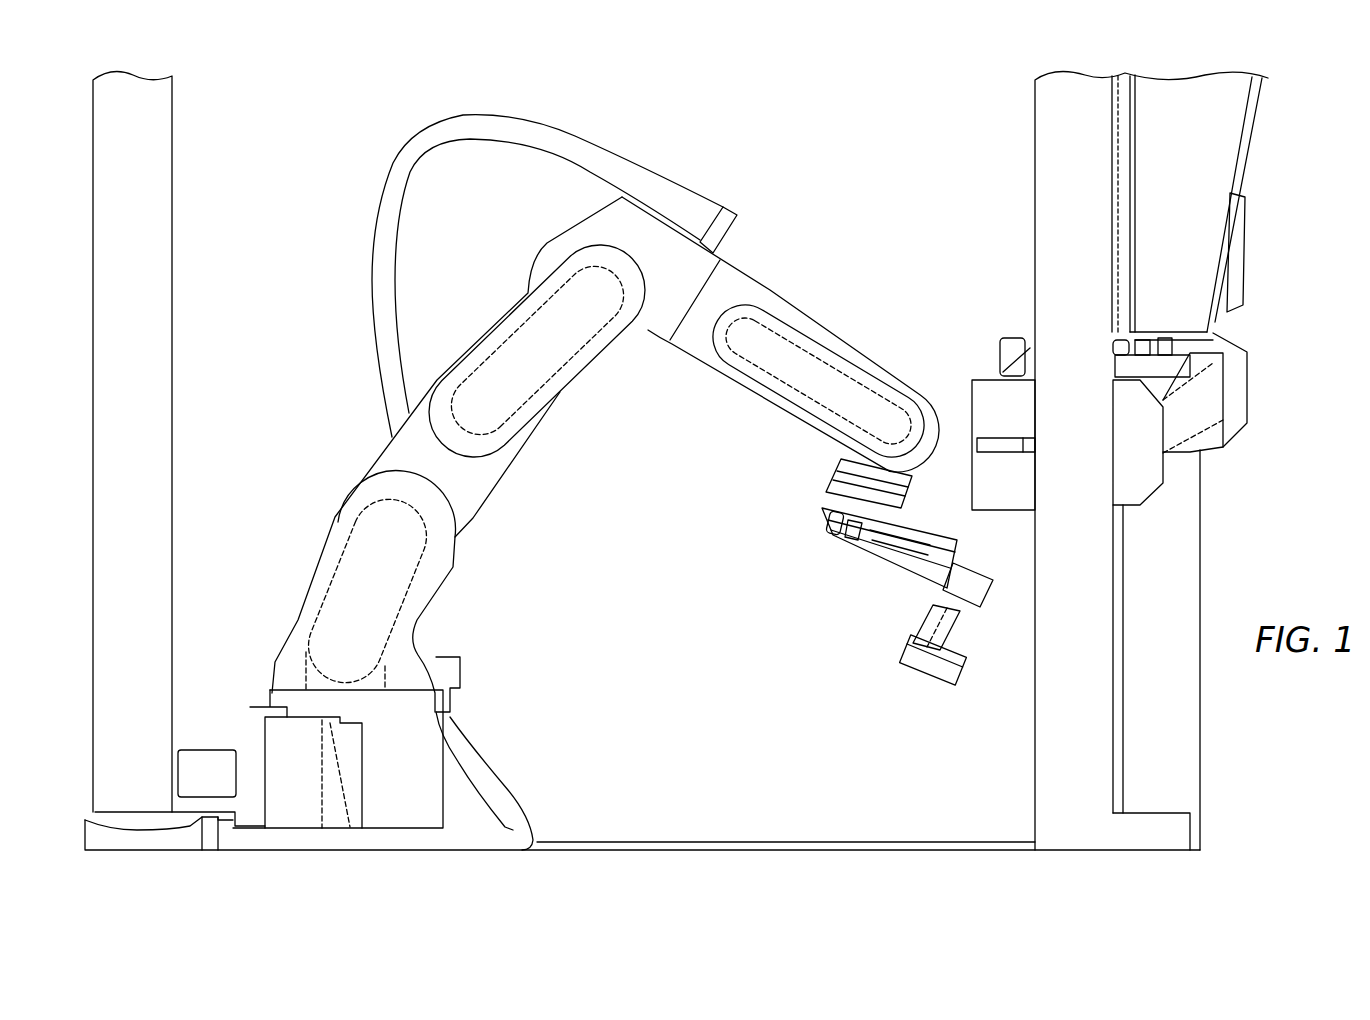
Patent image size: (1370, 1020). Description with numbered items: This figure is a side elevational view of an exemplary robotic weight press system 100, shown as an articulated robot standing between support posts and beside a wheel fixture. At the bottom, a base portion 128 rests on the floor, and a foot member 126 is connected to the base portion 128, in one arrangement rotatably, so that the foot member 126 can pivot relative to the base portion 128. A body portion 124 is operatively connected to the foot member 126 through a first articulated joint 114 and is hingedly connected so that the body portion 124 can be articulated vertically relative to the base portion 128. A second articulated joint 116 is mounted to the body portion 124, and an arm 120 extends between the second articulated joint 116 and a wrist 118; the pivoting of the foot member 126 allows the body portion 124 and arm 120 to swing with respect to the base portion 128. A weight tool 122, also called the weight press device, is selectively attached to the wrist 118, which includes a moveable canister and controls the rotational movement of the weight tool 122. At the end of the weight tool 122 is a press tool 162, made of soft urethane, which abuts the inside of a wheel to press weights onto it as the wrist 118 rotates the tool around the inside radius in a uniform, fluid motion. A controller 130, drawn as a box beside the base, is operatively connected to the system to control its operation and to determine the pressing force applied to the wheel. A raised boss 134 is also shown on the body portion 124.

The robotic weight press system 100 is at (841, 127).
The first articulated joint 114 is at (320, 480).
The second articulated joint 116 is at (530, 229).
The wrist 118 is at (837, 456).
The arm 120 is at (767, 343).
The weight tool 122 is at (849, 596).
The body portion 124 is at (456, 512).
The foot member 126 is at (432, 654).
The base portion 128 is at (403, 785).
The controller 130 is at (303, 773).
The joint boss 134 is at (527, 375).
The press tool 162 is at (930, 656).